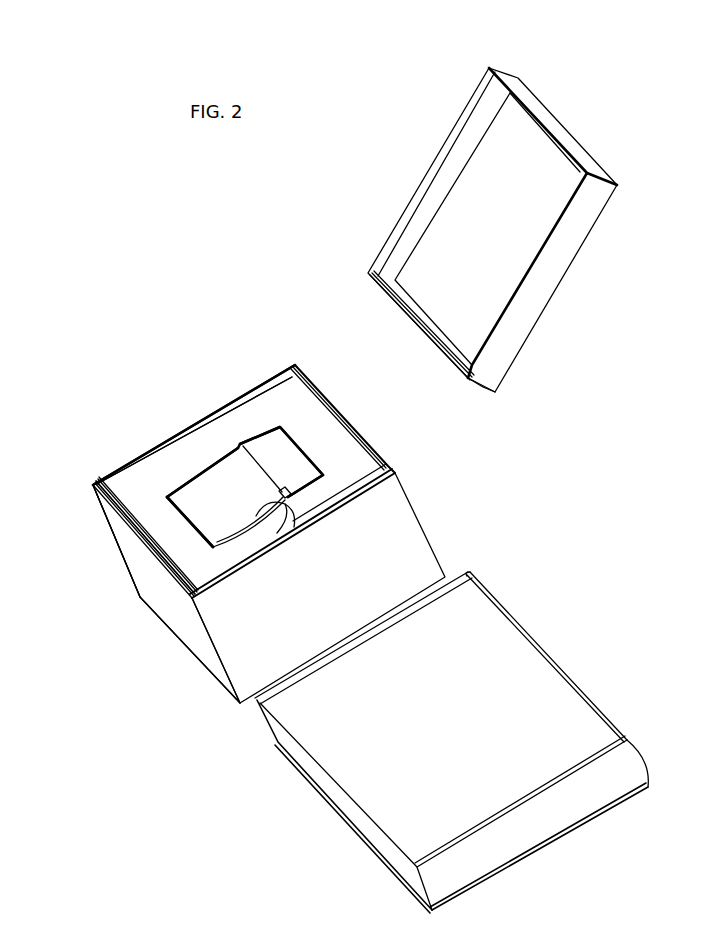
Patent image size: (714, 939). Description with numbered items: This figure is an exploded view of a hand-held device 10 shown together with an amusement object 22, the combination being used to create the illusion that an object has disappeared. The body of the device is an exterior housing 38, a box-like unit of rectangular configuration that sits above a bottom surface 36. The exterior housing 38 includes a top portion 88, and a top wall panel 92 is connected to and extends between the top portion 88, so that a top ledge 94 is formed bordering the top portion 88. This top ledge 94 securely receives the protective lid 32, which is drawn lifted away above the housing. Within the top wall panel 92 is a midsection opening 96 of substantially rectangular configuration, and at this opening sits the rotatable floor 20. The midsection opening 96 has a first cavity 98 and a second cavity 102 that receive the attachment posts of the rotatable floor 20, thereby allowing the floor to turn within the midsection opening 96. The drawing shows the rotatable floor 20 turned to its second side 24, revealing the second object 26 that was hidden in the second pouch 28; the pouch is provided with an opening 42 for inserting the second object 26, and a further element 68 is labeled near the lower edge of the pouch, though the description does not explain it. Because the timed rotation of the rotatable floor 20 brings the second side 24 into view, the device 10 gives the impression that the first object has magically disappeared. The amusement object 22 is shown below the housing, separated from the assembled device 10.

The device 10 is at (430, 495).
The rotatable floor 20 is at (258, 423).
The amusement object 22 is at (503, 598).
The second side 24 is at (287, 457).
The second object 26 is at (232, 468).
The second pouch 28 is at (140, 488).
The protective lid 32 is at (543, 115).
The bottom surface 36 is at (213, 680).
The exterior housing 38 is at (142, 573).
The opening 42 is at (290, 491).
The flap strip 68 is at (237, 535).
The top portion 88 is at (100, 500).
The top wall panel 92 is at (137, 491).
The top ledge 94 is at (93, 487).
The midsection opening 96 is at (187, 518).
The first cavity 98 is at (223, 459).
The second cavity 102 is at (277, 510).